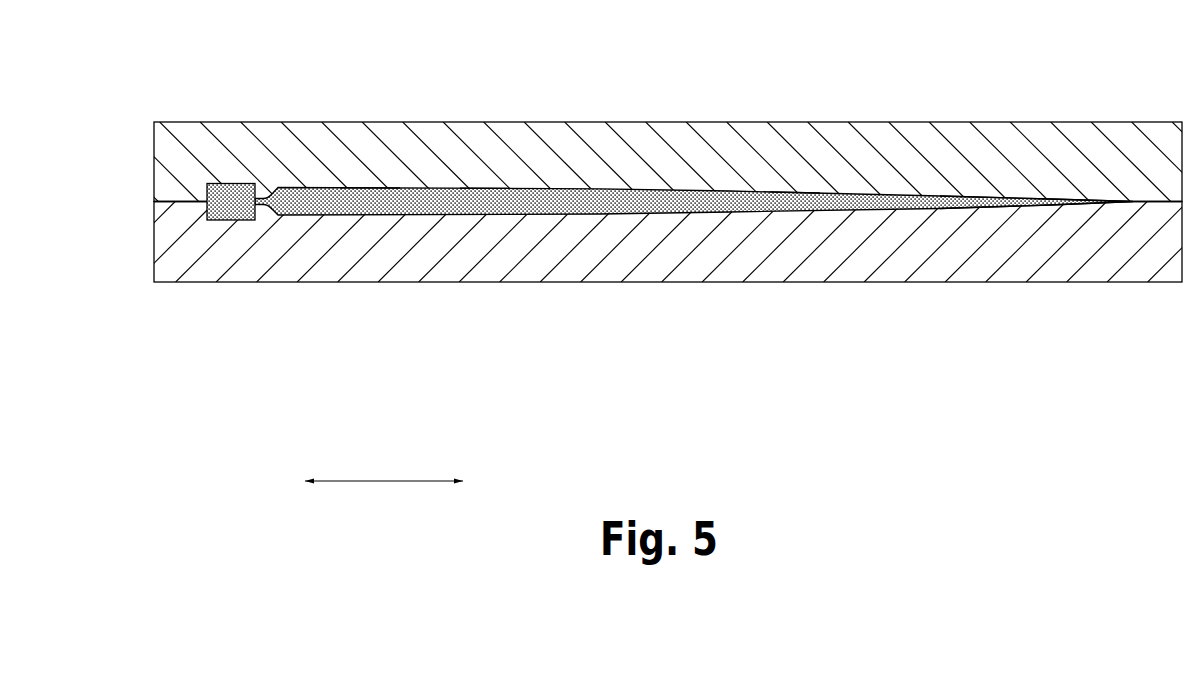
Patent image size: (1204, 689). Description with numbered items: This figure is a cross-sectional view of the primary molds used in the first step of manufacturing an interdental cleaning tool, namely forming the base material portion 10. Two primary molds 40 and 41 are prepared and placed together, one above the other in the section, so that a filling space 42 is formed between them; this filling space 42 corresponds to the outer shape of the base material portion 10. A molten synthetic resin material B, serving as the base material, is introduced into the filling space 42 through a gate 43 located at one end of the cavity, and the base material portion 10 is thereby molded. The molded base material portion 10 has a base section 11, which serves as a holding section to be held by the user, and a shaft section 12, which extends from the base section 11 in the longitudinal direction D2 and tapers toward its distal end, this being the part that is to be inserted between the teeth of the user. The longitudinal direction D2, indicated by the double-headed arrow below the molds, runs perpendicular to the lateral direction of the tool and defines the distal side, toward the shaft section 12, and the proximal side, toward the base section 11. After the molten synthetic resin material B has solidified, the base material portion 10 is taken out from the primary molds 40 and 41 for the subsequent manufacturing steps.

The base material portion 10 is at (672, 181).
The base section 11 is at (369, 188).
The shaft section 12 is at (960, 193).
The primary mold 40 is at (892, 122).
The primary mold 41 is at (893, 284).
The filling space 42 is at (781, 203).
The gate 43 is at (227, 183).
The molten synthetic resin material B is at (486, 188).
The longitudinal direction D2 is at (384, 468).